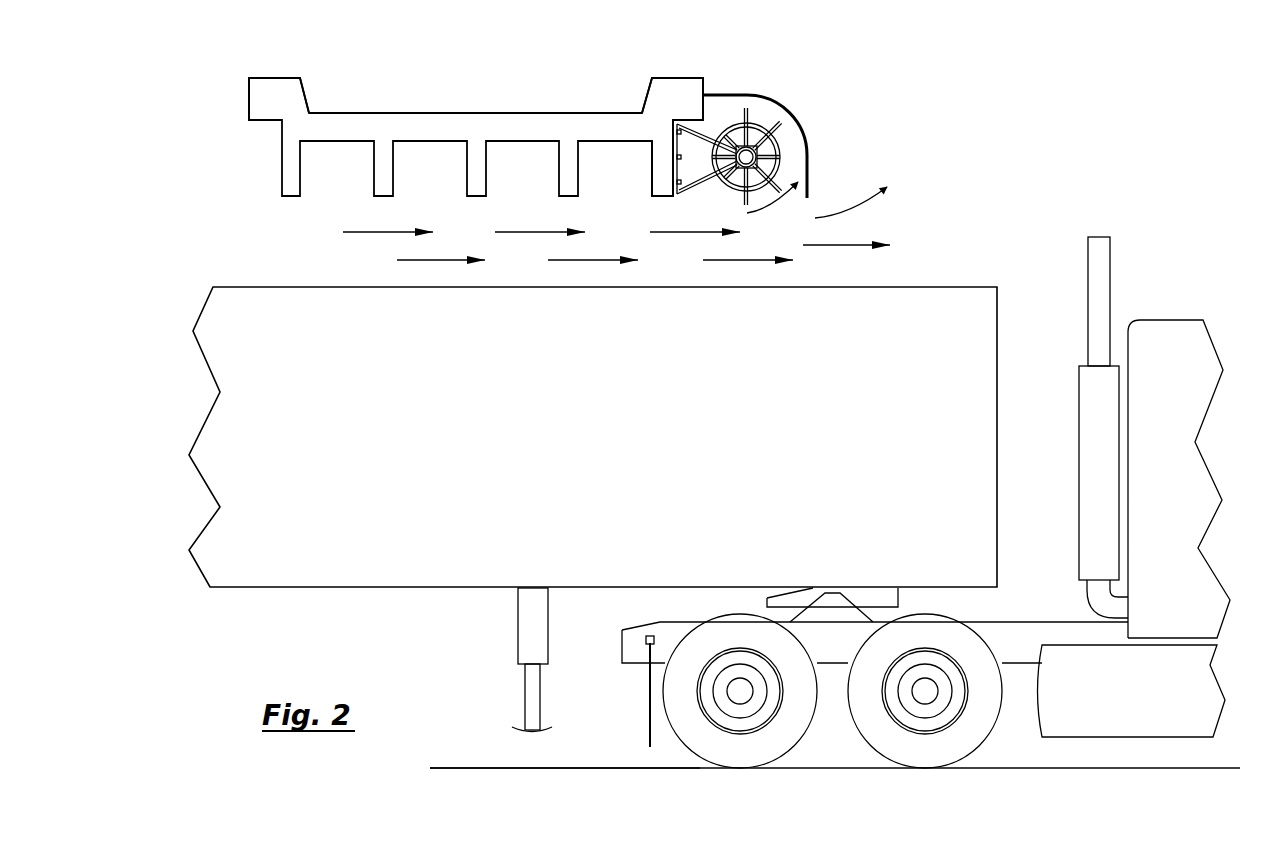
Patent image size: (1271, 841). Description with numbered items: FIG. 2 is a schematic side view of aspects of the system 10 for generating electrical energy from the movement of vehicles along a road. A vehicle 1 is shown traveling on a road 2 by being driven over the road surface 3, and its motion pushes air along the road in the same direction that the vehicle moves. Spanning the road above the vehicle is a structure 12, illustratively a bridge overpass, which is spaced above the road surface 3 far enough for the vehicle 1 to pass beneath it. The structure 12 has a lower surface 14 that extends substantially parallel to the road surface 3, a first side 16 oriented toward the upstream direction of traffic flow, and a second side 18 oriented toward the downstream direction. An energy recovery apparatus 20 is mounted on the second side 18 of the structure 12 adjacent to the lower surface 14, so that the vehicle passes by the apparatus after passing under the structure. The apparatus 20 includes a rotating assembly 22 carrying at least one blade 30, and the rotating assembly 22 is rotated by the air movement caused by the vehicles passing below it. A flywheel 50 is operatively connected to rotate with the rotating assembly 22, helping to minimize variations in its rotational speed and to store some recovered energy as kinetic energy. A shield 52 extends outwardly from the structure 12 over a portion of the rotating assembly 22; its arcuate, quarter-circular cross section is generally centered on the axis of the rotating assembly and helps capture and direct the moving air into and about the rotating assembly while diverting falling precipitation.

The vehicle 1 is at (953, 287).
The road 2 is at (453, 768).
The road surface 3 is at (476, 768).
The system 10 is at (823, 137).
The structure 12 is at (614, 108).
The lower surface 14 is at (652, 189).
The first side 16 is at (249, 107).
The second side 18 is at (703, 84).
The energy recovery apparatus 20 is at (812, 118).
The rotating assembly 22 is at (720, 193).
The blade 30 is at (808, 162).
The flywheel 50 is at (790, 98).
The shield 52 is at (745, 94).